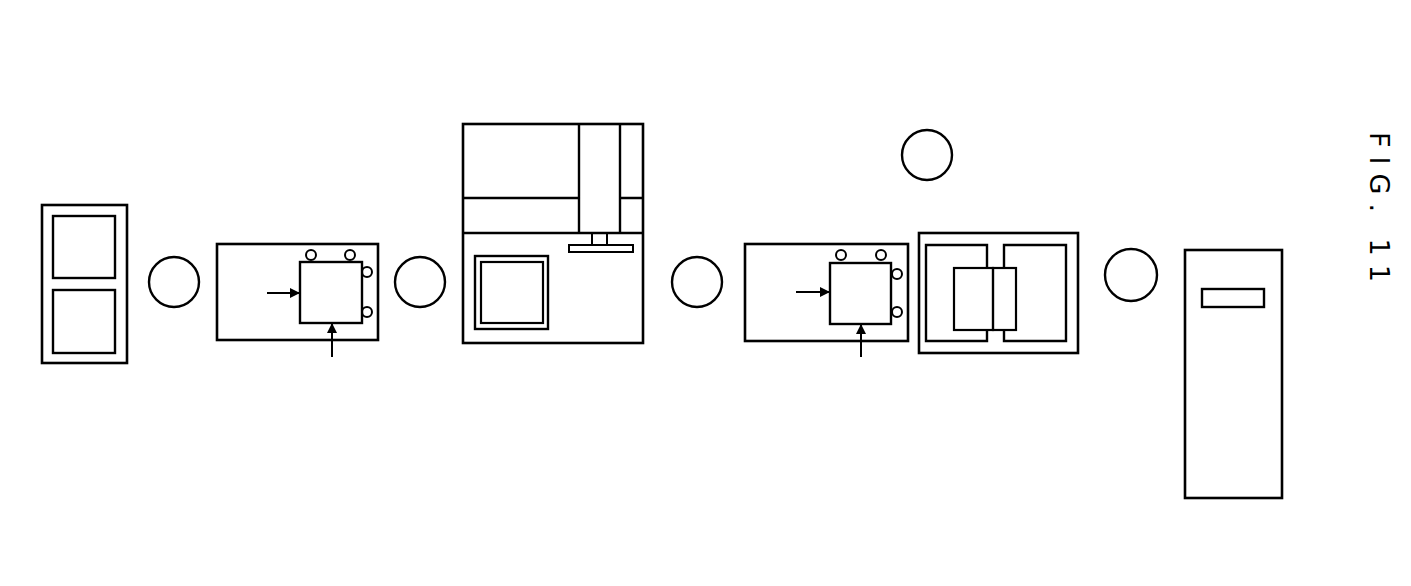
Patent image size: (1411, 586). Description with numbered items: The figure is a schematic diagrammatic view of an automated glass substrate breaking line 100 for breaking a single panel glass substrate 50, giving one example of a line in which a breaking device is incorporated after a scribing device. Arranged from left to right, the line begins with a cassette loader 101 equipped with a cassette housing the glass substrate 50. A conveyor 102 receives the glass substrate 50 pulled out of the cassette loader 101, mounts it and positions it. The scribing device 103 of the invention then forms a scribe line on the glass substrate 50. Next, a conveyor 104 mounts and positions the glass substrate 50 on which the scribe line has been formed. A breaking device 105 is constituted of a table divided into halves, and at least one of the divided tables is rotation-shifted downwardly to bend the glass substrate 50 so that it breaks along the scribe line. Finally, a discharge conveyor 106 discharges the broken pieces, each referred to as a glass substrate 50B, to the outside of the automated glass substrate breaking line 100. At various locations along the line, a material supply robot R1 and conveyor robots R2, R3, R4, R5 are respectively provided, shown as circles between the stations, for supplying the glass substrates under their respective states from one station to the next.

The automated glass substrate breaking line 100 is at (1115, 92).
The cassette loader 101 is at (98, 205).
The conveyor 102 is at (352, 244).
The scribing device 103 is at (635, 124).
The conveyor 104 is at (805, 341).
The breaking device 105 is at (1043, 233).
The discharge conveyor 106 is at (1233, 252).
The glass substrate 50 is at (313, 323).
The glass substrate 50B is at (1202, 299).
The material supply robot R1 is at (175, 307).
The conveyor robot R2 is at (420, 307).
The conveyor robot R3 is at (694, 307).
The conveyor robot R4 is at (933, 130).
The conveyor robot R5 is at (1131, 249).